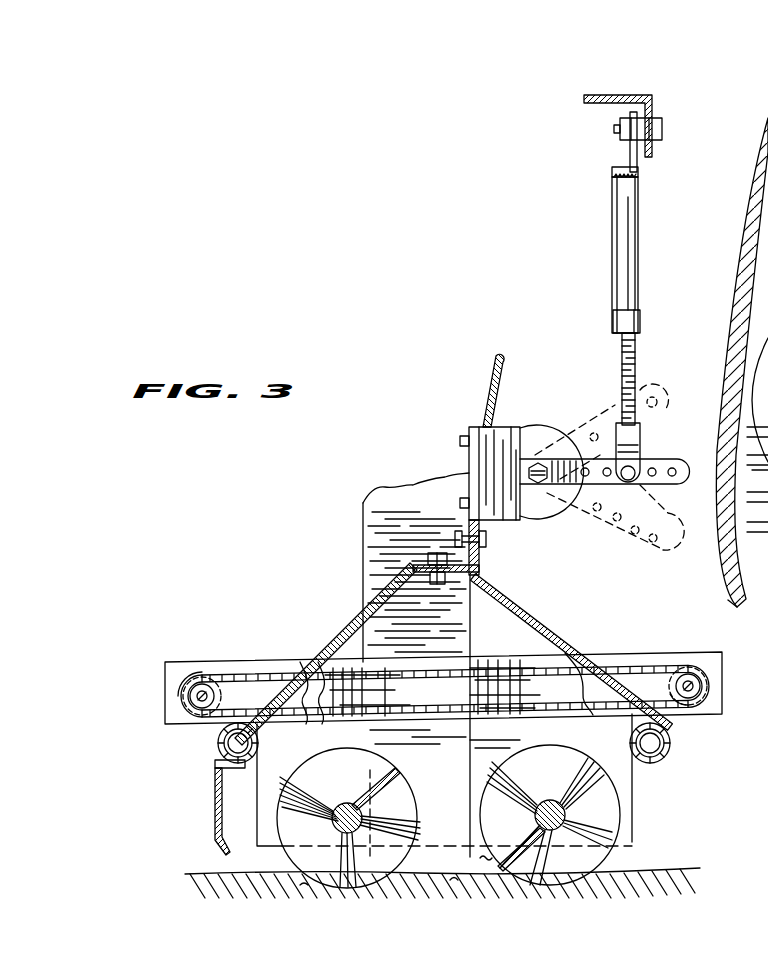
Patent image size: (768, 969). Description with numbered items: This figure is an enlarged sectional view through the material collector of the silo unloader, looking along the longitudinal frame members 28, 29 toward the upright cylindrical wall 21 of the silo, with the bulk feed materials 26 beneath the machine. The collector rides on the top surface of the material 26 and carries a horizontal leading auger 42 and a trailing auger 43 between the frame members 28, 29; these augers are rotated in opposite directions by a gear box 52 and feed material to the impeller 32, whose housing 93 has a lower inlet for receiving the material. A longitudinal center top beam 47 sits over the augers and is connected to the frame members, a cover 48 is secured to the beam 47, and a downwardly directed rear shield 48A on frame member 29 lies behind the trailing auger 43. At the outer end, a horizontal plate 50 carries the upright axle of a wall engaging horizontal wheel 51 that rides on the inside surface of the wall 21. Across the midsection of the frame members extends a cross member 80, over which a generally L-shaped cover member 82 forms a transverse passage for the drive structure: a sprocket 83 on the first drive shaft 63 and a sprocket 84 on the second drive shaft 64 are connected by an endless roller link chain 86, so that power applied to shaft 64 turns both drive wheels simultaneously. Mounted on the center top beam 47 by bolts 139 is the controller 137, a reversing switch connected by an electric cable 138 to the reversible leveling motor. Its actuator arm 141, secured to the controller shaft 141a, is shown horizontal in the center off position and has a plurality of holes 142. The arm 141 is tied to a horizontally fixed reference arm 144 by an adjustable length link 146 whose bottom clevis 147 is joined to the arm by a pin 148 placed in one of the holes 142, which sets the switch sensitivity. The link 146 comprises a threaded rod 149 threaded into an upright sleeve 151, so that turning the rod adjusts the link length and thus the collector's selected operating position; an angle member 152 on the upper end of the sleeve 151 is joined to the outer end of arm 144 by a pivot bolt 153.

The upright cylindrical wall 21 is at (752, 187).
The bulk feed materials 26 is at (633, 867).
The longitudinal frame member 28 is at (630, 735).
The longitudinal frame member 29 is at (252, 742).
The impeller 32 is at (393, 483).
The leading auger 42 is at (602, 786).
The trailing auger 43 is at (405, 812).
The center top beam 47 is at (487, 567).
The cover 48 is at (353, 620).
The rear shield 48A is at (217, 800).
The horizontal plate 50 is at (757, 470).
The wall engaging horizontal wheel 51 is at (742, 578).
The gear box 52 is at (270, 803).
The first drive shaft 63 is at (693, 697).
The second drive shaft 64 is at (203, 693).
The cross member 80 is at (435, 684).
The L-shaped cover member 82 is at (490, 657).
The sprocket 83 is at (686, 670).
The sprocket 84 is at (185, 697).
The endless roller link chain 86 is at (653, 667).
The housing 93 is at (365, 557).
The controller 137 is at (510, 432).
The electric cable 138 is at (487, 385).
The bolts 139 is at (486, 537).
The actuator arm 141 is at (663, 460).
The controller shaft 141a is at (536, 472).
The holes 142 is at (672, 480).
The reference arm 144 is at (630, 90).
The adjustable length link 146 is at (597, 203).
The bottom clevis 147 is at (637, 423).
The pin 148 is at (627, 480).
The threaded rod 149 is at (618, 370).
The upright sleeve 151 is at (633, 298).
The angle member 152 is at (614, 168).
The pivot bolt 153 is at (615, 127).